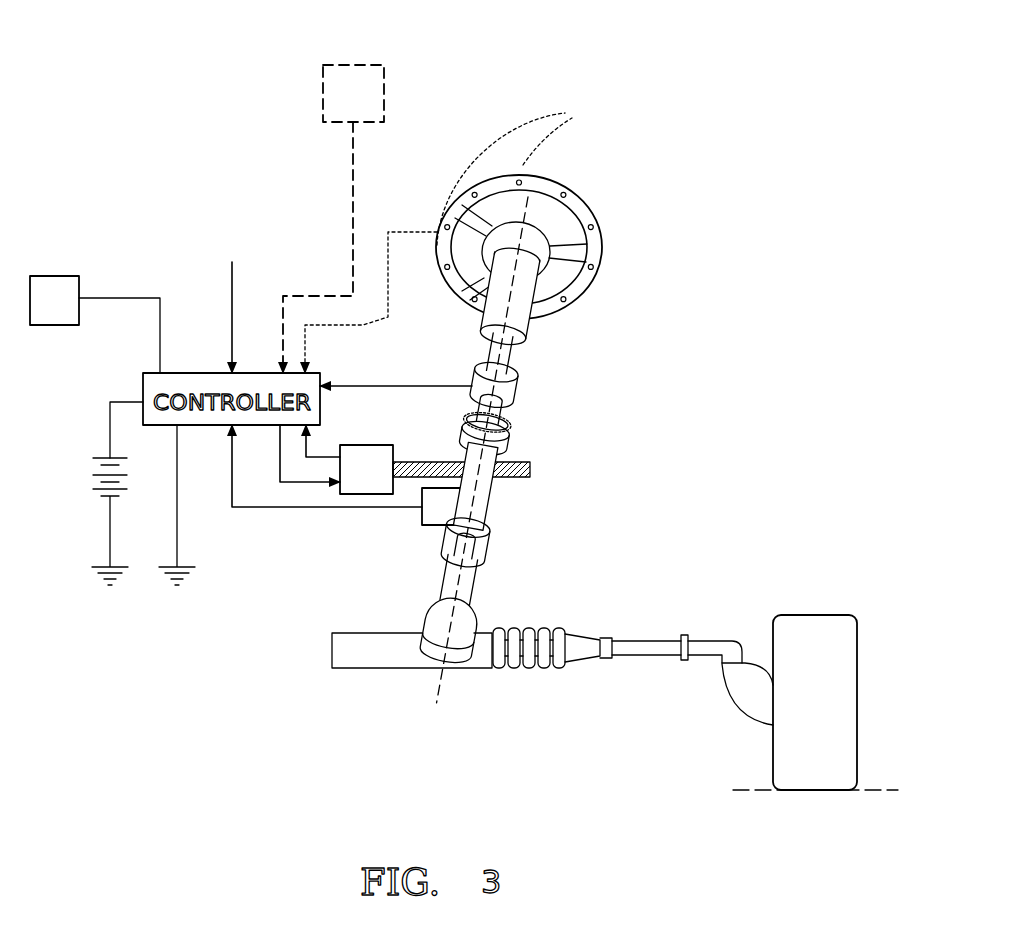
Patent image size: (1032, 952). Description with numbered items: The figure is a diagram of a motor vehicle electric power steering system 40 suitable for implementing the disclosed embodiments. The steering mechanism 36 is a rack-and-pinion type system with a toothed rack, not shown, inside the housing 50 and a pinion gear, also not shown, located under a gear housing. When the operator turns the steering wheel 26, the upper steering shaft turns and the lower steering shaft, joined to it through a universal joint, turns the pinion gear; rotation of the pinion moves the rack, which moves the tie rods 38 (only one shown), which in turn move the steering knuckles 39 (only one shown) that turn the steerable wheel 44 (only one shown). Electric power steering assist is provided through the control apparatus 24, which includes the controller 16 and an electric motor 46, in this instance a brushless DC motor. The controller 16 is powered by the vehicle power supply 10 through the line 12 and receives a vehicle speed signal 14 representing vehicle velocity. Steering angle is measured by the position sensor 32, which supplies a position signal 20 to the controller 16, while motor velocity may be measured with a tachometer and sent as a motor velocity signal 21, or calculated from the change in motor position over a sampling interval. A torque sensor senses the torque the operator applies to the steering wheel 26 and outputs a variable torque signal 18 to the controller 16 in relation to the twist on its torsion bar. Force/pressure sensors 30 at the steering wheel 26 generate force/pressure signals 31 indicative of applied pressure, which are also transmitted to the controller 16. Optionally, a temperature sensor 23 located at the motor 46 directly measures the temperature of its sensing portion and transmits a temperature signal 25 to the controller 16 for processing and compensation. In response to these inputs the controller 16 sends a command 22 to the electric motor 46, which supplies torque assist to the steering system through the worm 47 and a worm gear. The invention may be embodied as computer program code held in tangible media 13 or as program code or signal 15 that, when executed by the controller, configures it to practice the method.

The vehicle power supply 10 is at (93, 478).
The line 12 is at (130, 402).
The tangible media 13 is at (58, 276).
The vehicle speed signal 14 is at (233, 343).
The computer program code or signal 15 is at (137, 298).
The controller 16 is at (203, 373).
The torque signal 18 is at (412, 384).
The position signal 20 is at (320, 508).
The motor velocity signal 21 is at (318, 452).
The command 22 is at (281, 484).
The temperature sensor 23 is at (362, 65).
The control apparatus 24 is at (680, 363).
The temperature signal 25 is at (355, 147).
The steering wheel 26 is at (568, 198).
The force/pressure sensors 30 is at (526, 175).
The force/pressure signals 31 is at (371, 303).
The position sensor 32 is at (422, 516).
The steering mechanism 36 is at (557, 620).
The tie rods 38 is at (643, 648).
The steering knuckles 39 is at (743, 700).
The motor vehicle electric power steering system 40 is at (772, 458).
The steerable wheel 44 is at (833, 620).
The electric motor 46 is at (380, 445).
The worm 47 is at (530, 462).
The housing 50 is at (350, 657).